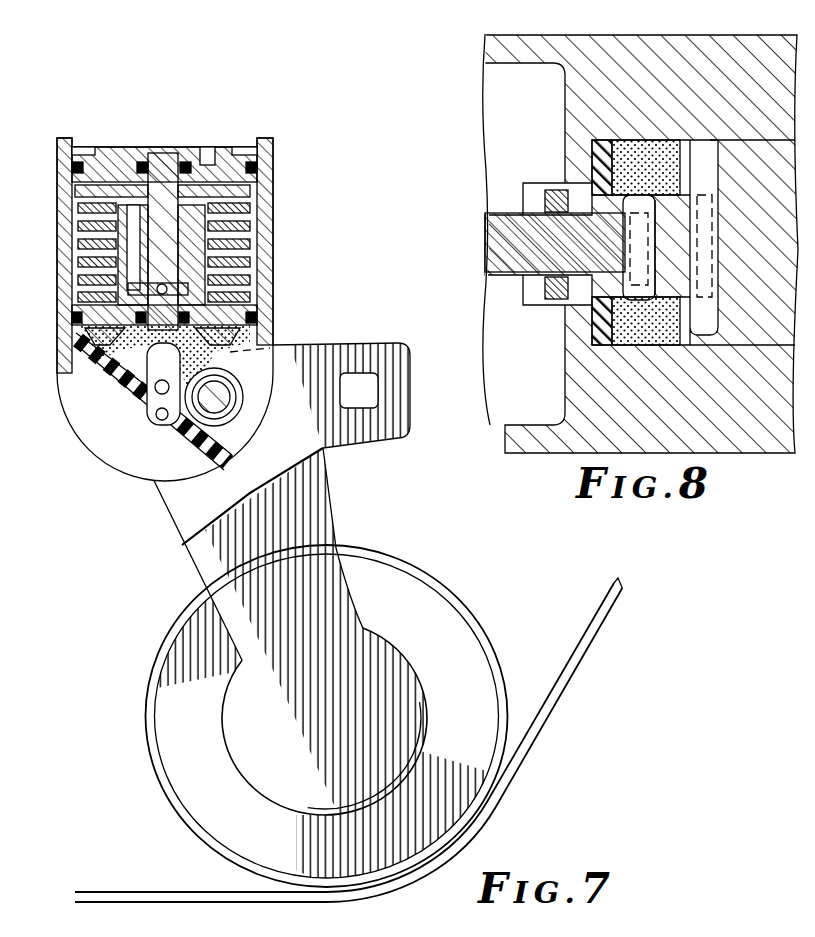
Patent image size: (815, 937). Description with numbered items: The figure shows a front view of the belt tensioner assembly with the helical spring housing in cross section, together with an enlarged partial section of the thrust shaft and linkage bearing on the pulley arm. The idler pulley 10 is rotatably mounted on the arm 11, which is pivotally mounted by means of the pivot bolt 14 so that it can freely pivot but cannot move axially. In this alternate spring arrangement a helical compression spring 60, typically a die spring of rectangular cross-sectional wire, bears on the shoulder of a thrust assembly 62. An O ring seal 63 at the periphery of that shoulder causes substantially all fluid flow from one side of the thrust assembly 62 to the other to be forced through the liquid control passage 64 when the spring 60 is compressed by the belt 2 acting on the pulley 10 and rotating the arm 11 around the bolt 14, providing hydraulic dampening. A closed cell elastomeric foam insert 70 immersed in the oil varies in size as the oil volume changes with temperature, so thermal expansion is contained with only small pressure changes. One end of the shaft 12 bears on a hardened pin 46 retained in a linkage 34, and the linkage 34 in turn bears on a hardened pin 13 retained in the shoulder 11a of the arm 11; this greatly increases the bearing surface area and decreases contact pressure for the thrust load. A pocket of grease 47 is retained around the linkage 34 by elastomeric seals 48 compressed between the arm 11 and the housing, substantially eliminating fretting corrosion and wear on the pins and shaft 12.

In FIG. 7, the belt 2 is at (540, 695).
In FIG. 7, the idler pulley 10 is at (455, 622).
In FIG. 7, the arm 11 is at (212, 548).
In FIG. 8, the arm 11 is at (707, 247).
In FIG. 8, the shoulder 11a is at (722, 180).
In FIG. 8, the shaft 12 is at (517, 258).
In FIG. 8, the pin 13 is at (702, 158).
In FIG. 7, the pivot bolt 14 is at (230, 400).
In FIG. 8, the linkage 34 is at (663, 270).
In FIG. 8, the pin 46 is at (637, 292).
In FIG. 7, the grease 47 is at (130, 425).
In FIG. 8, the grease 47 is at (650, 165).
In FIG. 7, the elastomeric seal 48 is at (100, 380).
In FIG. 8, the elastomeric seal 48 is at (600, 345).
In FIG. 7, the helical compression spring 60 is at (245, 220).
In FIG. 7, the thrust assembly 62 is at (205, 252).
In FIG. 7, the O ring seal 63 is at (72, 318).
In FIG. 7, the liquid control passage 64 is at (70, 290).
In FIG. 7, the closed cell elastomeric foam insert 70 is at (95, 340).